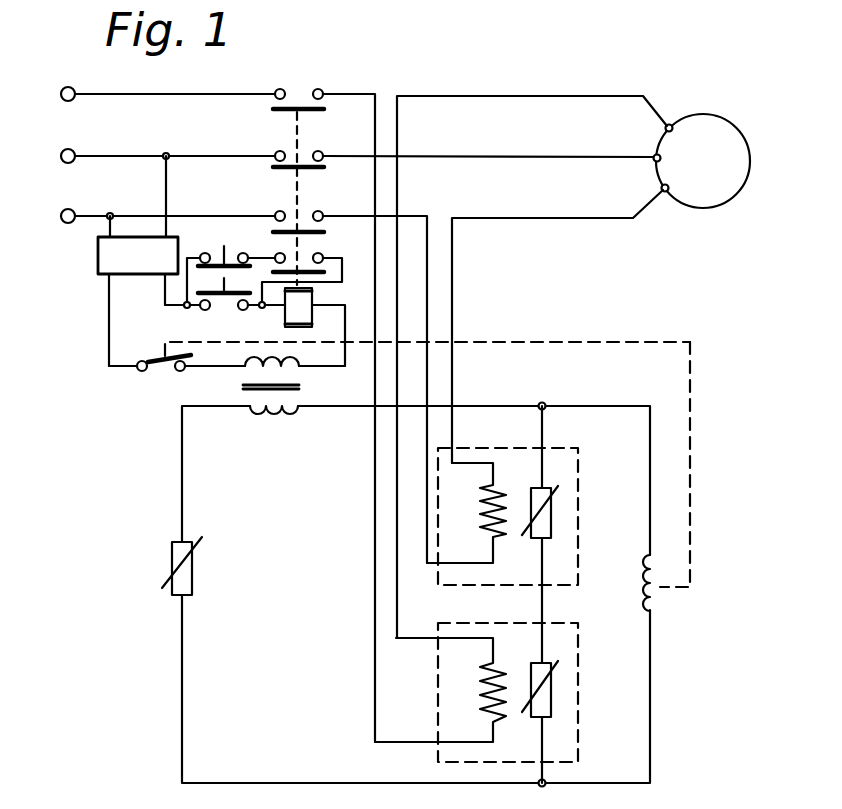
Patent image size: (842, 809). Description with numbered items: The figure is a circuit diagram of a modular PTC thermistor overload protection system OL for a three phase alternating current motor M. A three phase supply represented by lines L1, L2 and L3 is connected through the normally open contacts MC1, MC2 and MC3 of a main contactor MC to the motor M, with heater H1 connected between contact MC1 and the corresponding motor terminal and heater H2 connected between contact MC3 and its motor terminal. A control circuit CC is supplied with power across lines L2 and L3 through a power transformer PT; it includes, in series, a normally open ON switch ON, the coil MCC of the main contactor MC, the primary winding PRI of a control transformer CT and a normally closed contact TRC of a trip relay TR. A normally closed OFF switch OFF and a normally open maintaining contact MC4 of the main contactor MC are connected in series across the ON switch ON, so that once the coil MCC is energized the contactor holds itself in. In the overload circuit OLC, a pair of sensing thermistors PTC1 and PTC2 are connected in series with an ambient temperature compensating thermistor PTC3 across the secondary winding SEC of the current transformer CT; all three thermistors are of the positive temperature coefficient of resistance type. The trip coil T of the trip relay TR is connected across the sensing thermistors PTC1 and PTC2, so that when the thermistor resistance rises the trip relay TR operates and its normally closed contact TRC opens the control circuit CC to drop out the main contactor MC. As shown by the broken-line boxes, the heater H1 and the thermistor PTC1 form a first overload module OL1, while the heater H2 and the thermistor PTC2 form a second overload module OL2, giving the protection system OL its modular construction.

The line L1 is at (152, 95).
The line L2 is at (152, 156).
The line L3 is at (152, 216).
The main contactor MC is at (296, 190).
The normally open contact MC1 is at (300, 92).
The normally open contact MC2 is at (306, 152).
The normally open contact MC3 is at (306, 212).
The maintaining contact MC4 is at (306, 254).
The motor M is at (573, 367).
The power transformer PT is at (138, 261).
The OFF switch OFF is at (220, 268).
The ON switch ON is at (241, 292).
The coil MCC is at (297, 309).
The control circuit CC is at (88, 348).
The normally closed contact TRC is at (160, 372).
The control transformer CT is at (242, 388).
The primary winding PRI is at (278, 358).
The secondary winding SEC is at (272, 412).
The ambient temperature compensating thermistor PTC3 is at (171, 548).
The overload circuit OLC is at (330, 572).
The modular PTC thermistor overload protection system OL is at (500, 308).
The second overload module OL2 is at (550, 450).
The heater H2 is at (482, 512).
The sensing thermistor PTC2 is at (560, 518).
The first overload module OL1 is at (549, 623).
The heater H1 is at (482, 693).
The sensing thermistor PTC1 is at (560, 698).
The trip relay TR is at (692, 512).
The trip coil T is at (656, 600).